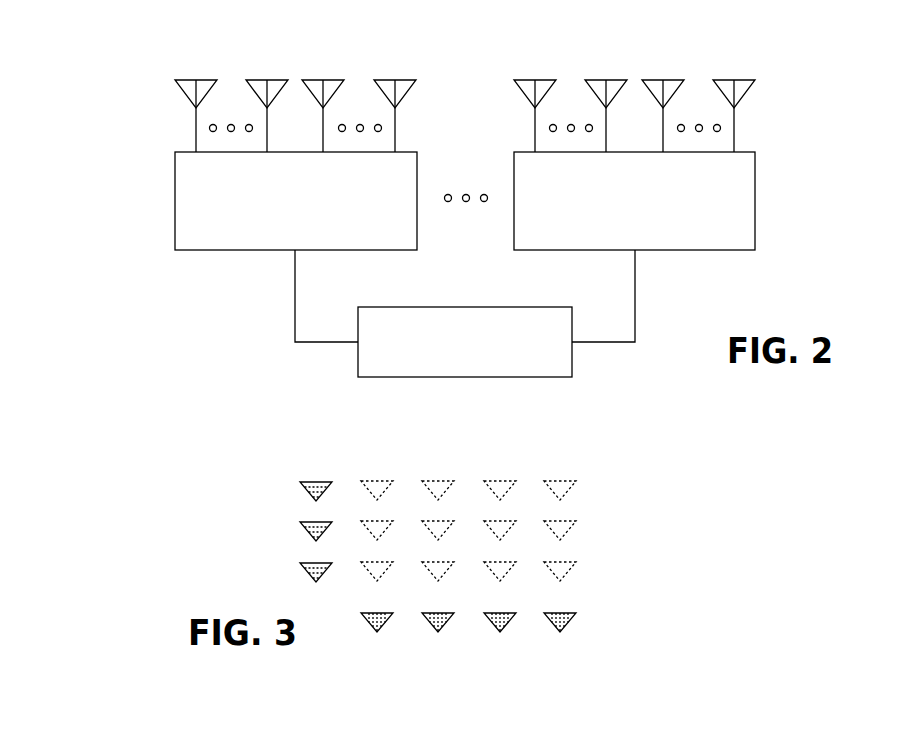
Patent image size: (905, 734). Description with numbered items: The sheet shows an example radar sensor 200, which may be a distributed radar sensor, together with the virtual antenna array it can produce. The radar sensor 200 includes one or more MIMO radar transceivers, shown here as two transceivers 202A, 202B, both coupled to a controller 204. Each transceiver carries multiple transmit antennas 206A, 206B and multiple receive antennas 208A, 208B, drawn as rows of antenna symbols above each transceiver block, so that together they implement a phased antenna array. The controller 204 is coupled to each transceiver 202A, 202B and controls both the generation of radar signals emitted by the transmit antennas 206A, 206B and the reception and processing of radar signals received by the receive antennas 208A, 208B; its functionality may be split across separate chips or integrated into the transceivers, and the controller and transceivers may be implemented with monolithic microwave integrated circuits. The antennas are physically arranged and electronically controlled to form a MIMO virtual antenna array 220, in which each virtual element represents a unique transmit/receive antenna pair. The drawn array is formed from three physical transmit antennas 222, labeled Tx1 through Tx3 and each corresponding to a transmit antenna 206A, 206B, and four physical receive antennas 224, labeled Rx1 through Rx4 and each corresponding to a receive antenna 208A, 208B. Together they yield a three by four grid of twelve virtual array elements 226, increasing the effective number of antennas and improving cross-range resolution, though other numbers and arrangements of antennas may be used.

In FIG. 2, the radar sensor 200 is at (72, 90).
In FIG. 2, the MIMO radar transceiver 202A is at (270, 240).
In FIG. 2, the MIMO radar transceiver 202B is at (608, 240).
In FIG. 2, the controller 204 is at (444, 365).
In FIG. 2, the transmit antennas 206A is at (192, 78).
In FIG. 2, the transmit antennas 206B is at (531, 78).
In FIG. 2, the receive antennas 208A is at (403, 96).
In FIG. 2, the receive antennas 208B is at (742, 96).
In FIG. 3, the virtual antenna array 220 is at (180, 529).
In FIG. 3, the physical transmit antennas 222 is at (316, 480).
In FIG. 3, the physical receive antennas 224 is at (570, 612).
In FIG. 3, the virtual array elements 226 is at (567, 480).